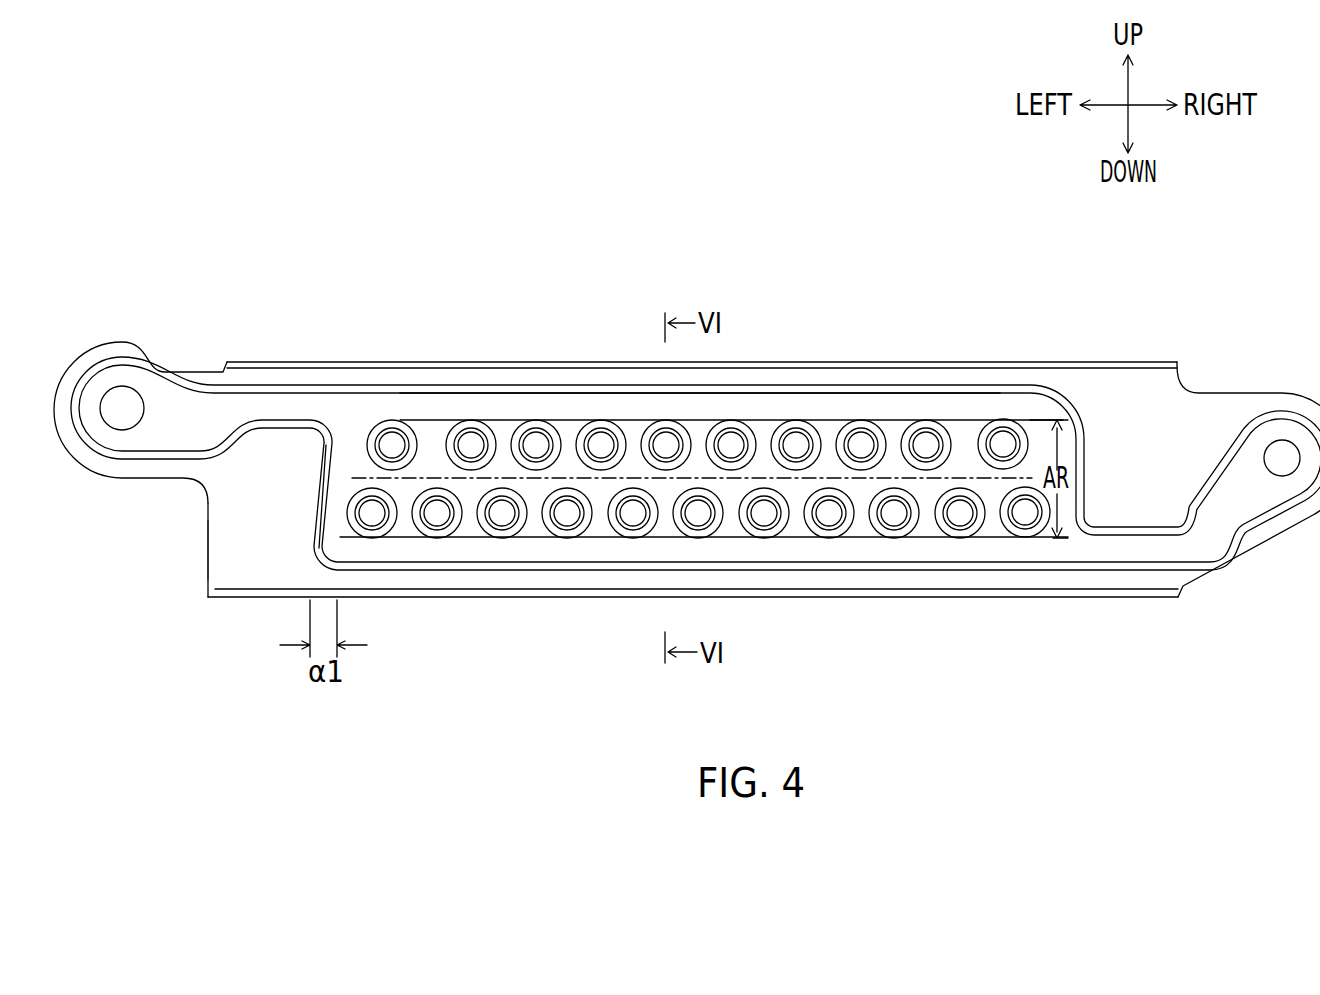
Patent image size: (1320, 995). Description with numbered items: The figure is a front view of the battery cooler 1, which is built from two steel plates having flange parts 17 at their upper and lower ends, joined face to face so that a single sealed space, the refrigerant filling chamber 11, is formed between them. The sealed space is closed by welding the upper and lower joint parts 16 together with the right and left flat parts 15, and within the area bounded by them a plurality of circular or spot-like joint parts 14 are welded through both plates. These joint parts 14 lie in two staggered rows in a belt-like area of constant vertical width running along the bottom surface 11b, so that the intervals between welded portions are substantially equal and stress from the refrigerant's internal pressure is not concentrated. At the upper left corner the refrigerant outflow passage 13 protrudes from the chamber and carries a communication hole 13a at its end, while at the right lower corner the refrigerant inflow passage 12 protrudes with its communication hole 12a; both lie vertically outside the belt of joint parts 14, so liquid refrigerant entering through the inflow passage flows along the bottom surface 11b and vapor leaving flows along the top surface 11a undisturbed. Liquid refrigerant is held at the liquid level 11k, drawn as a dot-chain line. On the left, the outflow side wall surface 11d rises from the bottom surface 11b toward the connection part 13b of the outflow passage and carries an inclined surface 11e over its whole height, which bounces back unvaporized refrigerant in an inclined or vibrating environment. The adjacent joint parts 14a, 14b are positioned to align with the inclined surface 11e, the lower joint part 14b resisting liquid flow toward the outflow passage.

The battery cooler 1 is at (687, 472).
The refrigerant filling chamber 11 is at (693, 486).
The top surface 11a is at (773, 395).
The bottom surface 11b is at (855, 555).
The outflow side wall surface 11d is at (310, 517).
The inclined surface 11e is at (343, 470).
The liquid level 11k is at (993, 480).
The refrigerant inflow passage 12 is at (1218, 502).
The communication hole 12a is at (1266, 460).
The refrigerant outflow passage 13 is at (198, 405).
The communication hole 13a is at (122, 405).
The connection part 13b is at (330, 467).
The joint parts 14 is at (698, 484).
The joint part 14a is at (392, 420).
The joint part 14b is at (378, 538).
The flat parts 15 is at (242, 525).
The joint parts 16 is at (606, 380).
The flange parts 17 is at (540, 360).